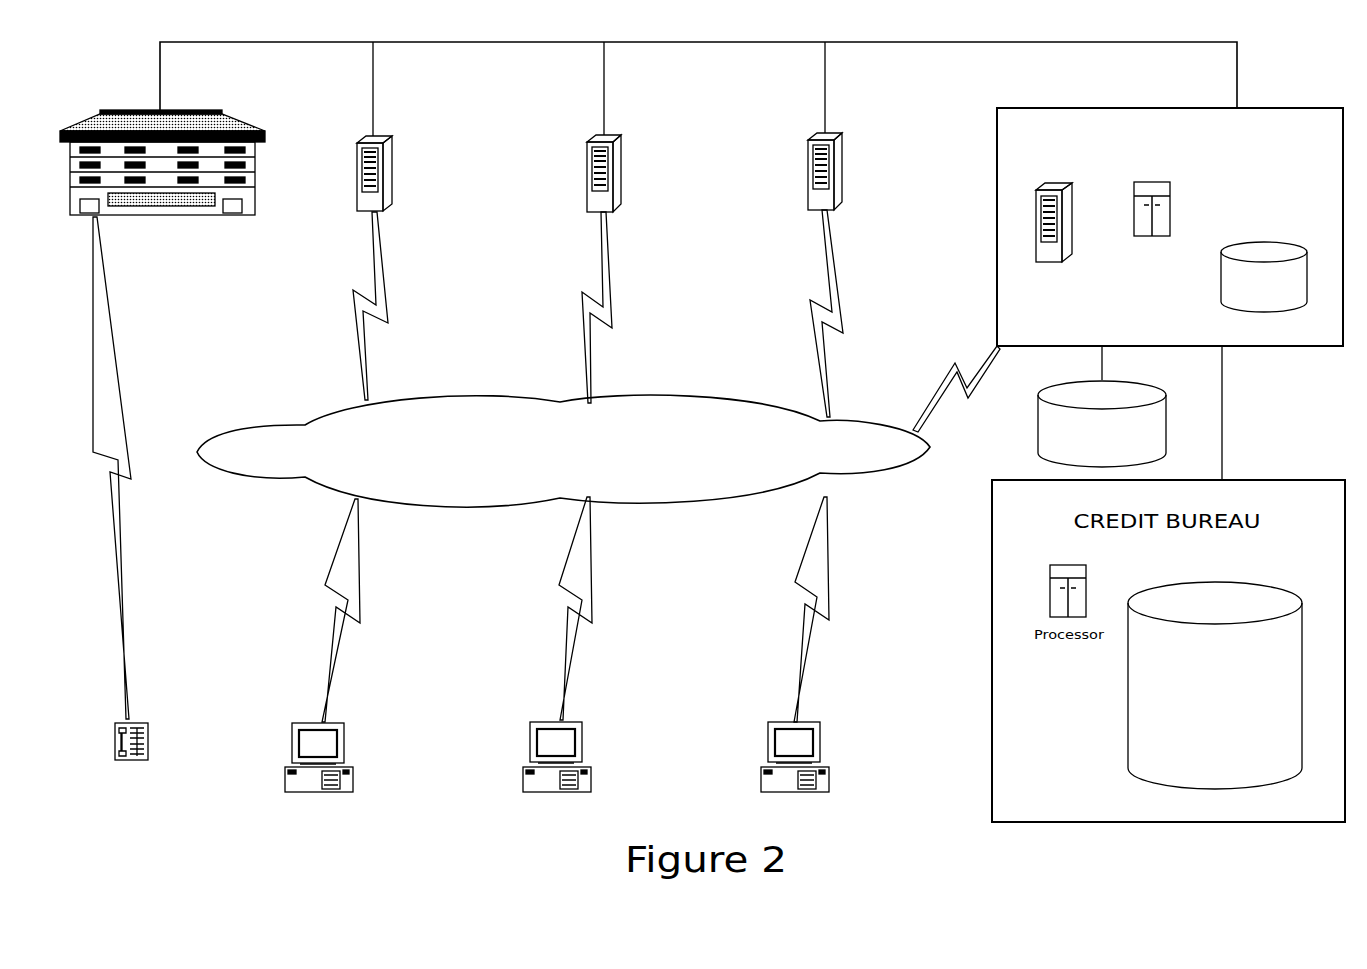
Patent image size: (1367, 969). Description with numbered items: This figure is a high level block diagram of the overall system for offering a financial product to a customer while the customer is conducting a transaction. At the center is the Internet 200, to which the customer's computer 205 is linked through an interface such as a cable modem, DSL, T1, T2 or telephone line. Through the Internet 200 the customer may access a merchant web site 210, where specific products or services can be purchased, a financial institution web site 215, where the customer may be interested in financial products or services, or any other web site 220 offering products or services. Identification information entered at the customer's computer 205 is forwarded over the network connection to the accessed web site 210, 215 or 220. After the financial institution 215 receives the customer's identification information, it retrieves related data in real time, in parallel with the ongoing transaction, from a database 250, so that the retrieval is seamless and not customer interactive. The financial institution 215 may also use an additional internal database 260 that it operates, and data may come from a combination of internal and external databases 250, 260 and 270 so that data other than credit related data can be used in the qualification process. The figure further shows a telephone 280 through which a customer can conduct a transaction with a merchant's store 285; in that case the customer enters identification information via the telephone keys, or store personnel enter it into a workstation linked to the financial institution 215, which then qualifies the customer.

The Internet 200 is at (487, 435).
The customer's computer 205 is at (363, 750).
The merchant web site 210 is at (388, 174).
The financial institution web site 215 is at (1048, 108).
The other web site 220 is at (843, 193).
The database 250 is at (1228, 753).
The internal database 260 is at (1222, 278).
The external database 270 is at (1037, 425).
The telephone 280 is at (167, 742).
The merchant's store 285 is at (97, 110).